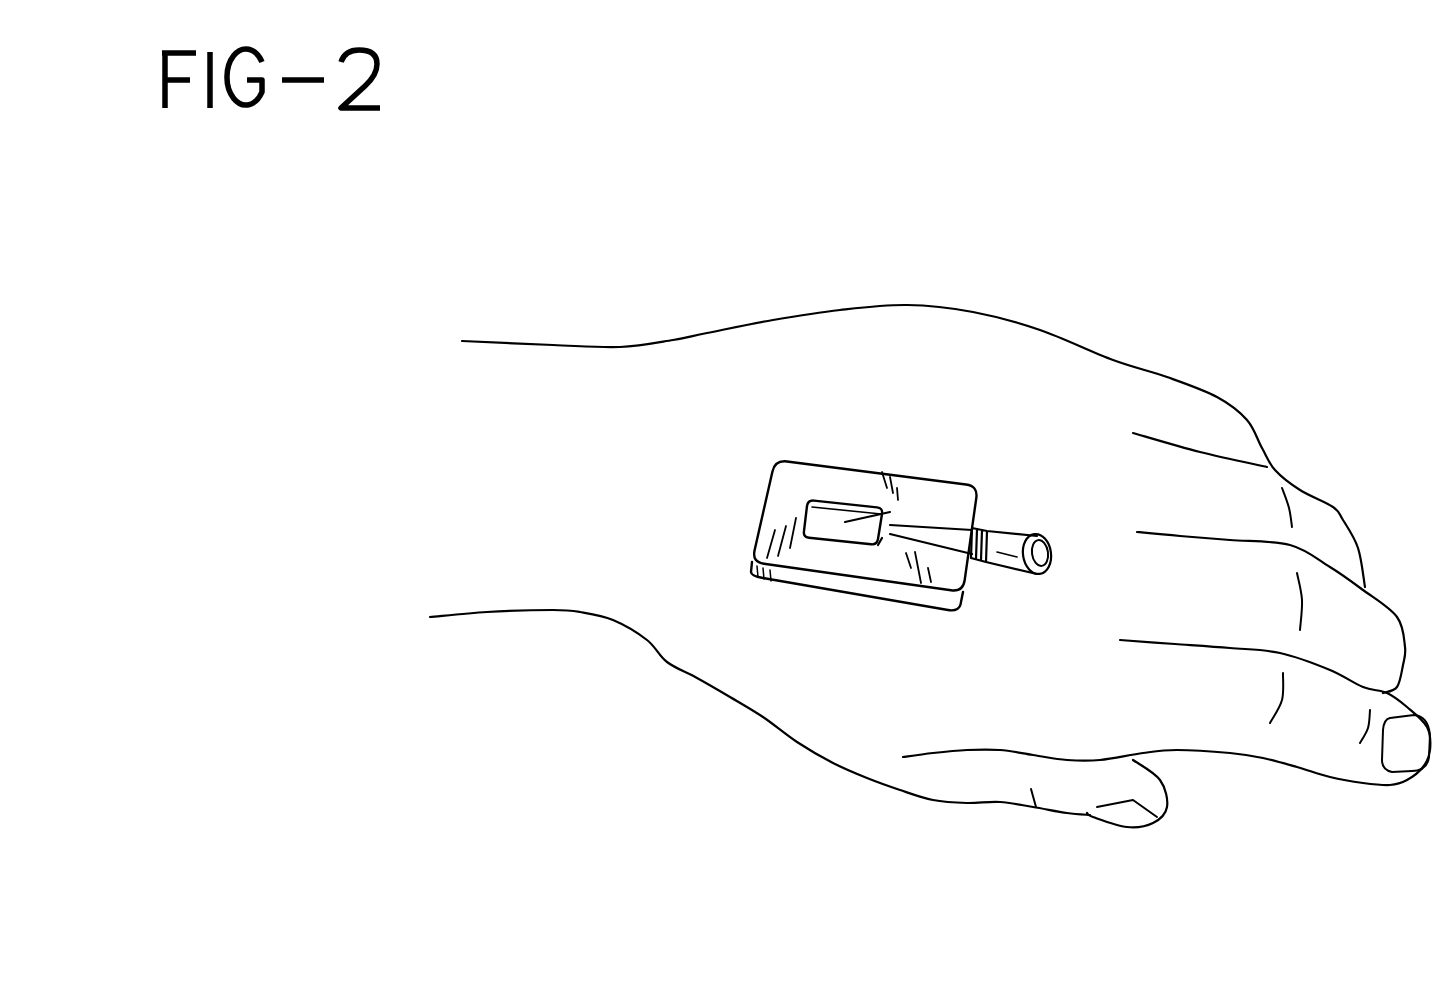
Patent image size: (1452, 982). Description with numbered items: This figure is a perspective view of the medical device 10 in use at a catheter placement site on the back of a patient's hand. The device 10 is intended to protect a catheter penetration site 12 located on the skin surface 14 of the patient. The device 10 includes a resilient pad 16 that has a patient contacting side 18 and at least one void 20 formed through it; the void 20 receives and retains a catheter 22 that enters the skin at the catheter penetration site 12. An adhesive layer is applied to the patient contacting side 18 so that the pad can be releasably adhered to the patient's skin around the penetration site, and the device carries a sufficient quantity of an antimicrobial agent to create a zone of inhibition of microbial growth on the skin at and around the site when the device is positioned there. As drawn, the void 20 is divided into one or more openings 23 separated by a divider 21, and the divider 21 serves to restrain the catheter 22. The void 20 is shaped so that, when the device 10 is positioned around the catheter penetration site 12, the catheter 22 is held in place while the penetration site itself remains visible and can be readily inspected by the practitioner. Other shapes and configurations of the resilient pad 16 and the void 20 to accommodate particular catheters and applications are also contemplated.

The medical device 10 is at (948, 533).
The catheter penetration site 12 is at (845, 522).
The skin surface 14 is at (675, 530).
The resilient pad 16 is at (792, 483).
The patient contacting side 18 is at (812, 594).
The void 20 is at (890, 512).
The divider 21 is at (888, 548).
The catheter 22 is at (1019, 534).
The openings 23 is at (817, 505).